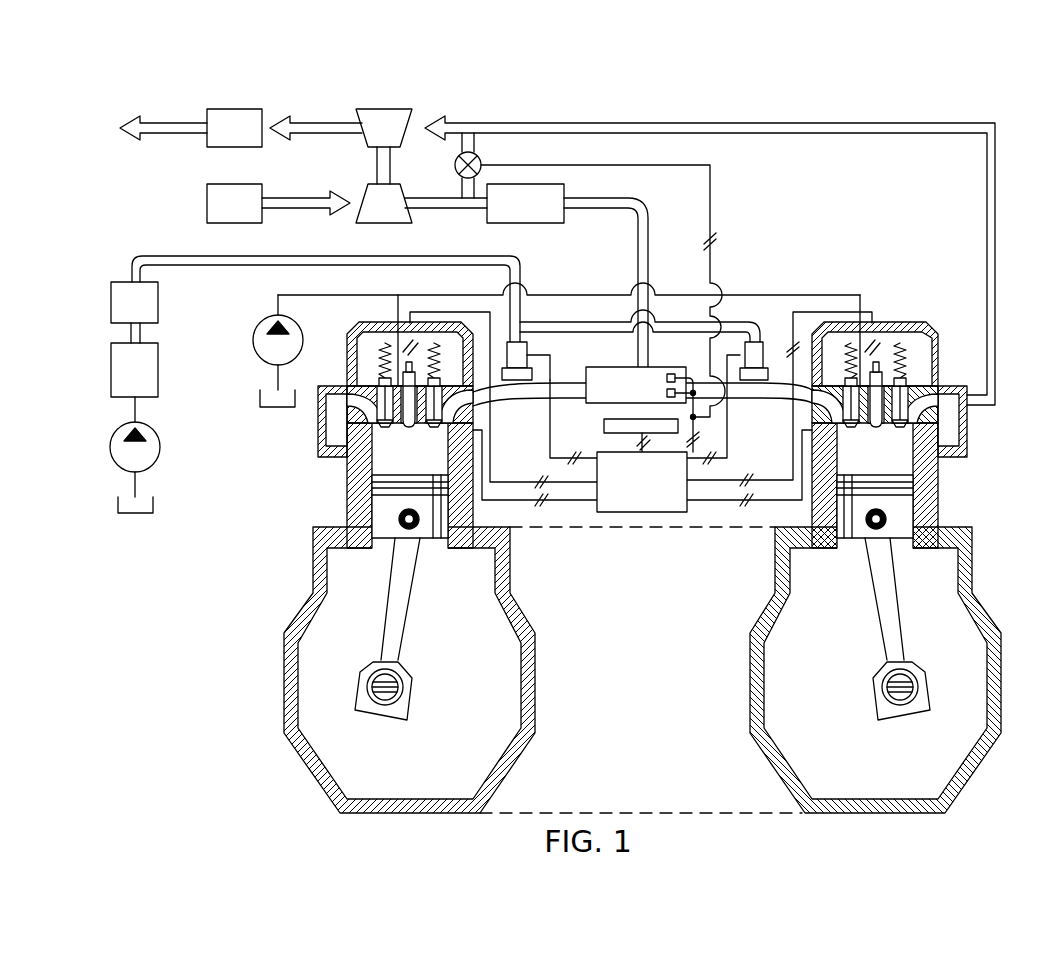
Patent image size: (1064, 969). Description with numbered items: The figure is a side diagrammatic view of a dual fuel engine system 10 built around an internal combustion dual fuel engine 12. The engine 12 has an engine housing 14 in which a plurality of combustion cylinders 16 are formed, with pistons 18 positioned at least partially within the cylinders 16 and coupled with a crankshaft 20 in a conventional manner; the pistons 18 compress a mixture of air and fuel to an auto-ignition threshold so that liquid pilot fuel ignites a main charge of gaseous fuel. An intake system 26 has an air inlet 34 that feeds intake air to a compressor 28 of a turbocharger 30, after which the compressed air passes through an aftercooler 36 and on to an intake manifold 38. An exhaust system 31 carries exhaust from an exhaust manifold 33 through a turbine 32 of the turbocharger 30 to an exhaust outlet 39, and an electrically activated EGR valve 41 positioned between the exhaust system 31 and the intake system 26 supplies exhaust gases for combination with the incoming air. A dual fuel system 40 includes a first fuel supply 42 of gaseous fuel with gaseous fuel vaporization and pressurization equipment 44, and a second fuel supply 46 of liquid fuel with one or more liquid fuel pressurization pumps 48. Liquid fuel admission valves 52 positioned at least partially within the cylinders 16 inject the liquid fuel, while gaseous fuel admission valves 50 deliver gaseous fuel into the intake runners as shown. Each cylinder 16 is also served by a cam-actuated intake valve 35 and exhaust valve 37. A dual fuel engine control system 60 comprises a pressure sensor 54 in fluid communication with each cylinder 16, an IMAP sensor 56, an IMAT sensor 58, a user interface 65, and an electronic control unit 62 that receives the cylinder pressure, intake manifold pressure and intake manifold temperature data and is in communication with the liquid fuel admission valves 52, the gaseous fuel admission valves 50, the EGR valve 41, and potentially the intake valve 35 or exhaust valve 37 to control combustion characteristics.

The dual fuel engine system 10 is at (1022, 120).
The internal combustion dual fuel engine 12 is at (978, 540).
The engine housing 14 is at (938, 461).
The combustion cylinders 16 is at (372, 452).
The pistons 18 is at (378, 511).
The crankshaft 20 is at (870, 686).
The intake system 26 is at (160, 236).
The compressor 28 is at (386, 224).
The turbocharger 30 is at (426, 120).
The exhaust system 31 is at (998, 270).
The turbine 32 is at (386, 108).
The exhaust manifold 33 is at (968, 418).
The air inlet 34 is at (236, 183).
The intake valve 35 is at (431, 428).
The aftercooler 36 is at (526, 224).
The exhaust valve 37 is at (387, 428).
The intake manifold 38 is at (615, 367).
The exhaust outlet 39 is at (236, 108).
The dual fuel system 40 is at (100, 527).
The EGR valve 41 is at (455, 165).
The first fuel supply 42 is at (153, 505).
The gaseous fuel vaporization and pressurization equipment 44 is at (100, 422).
The second fuel supply 46 is at (259, 401).
The liquid fuel pressurization pumps 48 is at (253, 328).
The gaseous fuel admission valve 50 is at (527, 351).
The liquid fuel admission valves 52 is at (352, 386).
The pressure sensor 54 is at (460, 437).
The IMAP sensor 56 is at (670, 374).
The IMAT sensor 58 is at (667, 393).
The dual fuel engine control system 60 is at (586, 512).
The electronic control unit 62 is at (655, 512).
The user interface 65 is at (604, 427).